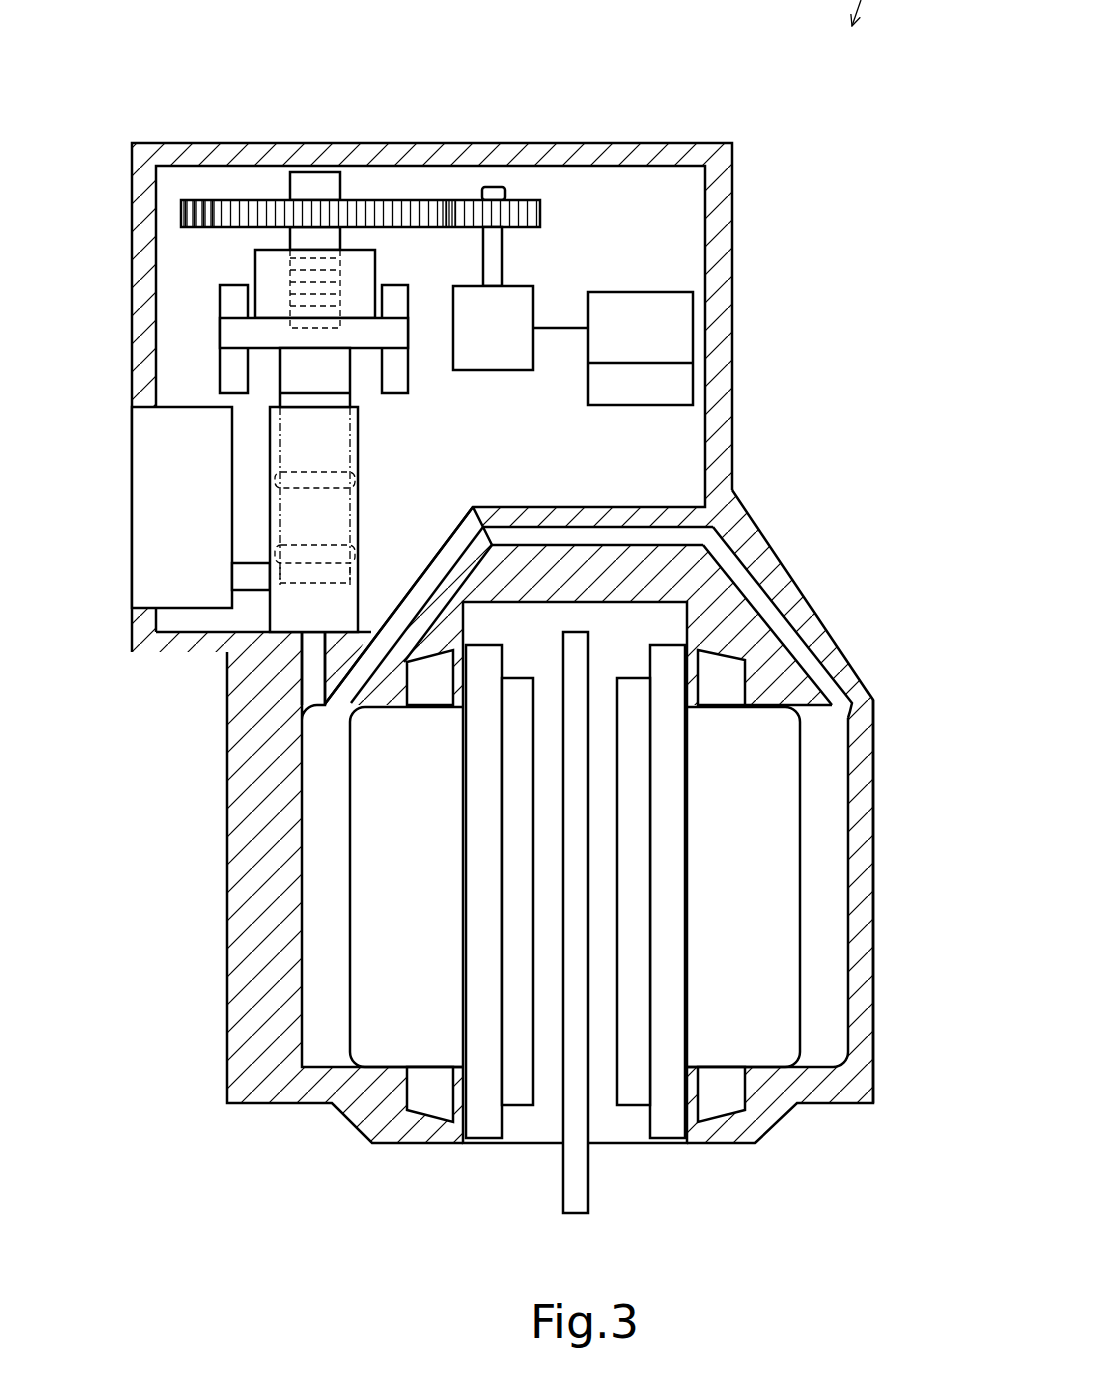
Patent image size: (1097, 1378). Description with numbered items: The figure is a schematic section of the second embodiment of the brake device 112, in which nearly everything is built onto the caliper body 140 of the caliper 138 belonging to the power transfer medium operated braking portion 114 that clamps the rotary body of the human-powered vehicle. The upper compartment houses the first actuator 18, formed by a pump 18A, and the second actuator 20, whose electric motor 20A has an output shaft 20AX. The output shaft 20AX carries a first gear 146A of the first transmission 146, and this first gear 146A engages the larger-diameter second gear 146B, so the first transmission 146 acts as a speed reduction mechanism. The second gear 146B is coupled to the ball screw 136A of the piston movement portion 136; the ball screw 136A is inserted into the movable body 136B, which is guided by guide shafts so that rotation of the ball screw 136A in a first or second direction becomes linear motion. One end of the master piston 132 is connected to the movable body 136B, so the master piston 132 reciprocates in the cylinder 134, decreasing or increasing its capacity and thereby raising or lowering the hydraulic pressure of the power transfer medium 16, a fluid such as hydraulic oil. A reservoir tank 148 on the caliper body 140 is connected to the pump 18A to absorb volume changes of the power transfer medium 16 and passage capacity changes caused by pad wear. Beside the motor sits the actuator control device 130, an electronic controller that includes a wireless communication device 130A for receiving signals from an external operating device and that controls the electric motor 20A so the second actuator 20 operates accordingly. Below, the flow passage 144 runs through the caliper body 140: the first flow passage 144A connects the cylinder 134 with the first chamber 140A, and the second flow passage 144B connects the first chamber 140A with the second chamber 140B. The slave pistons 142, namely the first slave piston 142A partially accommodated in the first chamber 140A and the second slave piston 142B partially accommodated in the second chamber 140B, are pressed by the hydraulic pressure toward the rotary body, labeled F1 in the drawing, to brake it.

The brake device 112 is at (762, 126).
The power transfer medium operated braking portion 114 is at (819, 553).
The power transfer medium 16 is at (333, 603).
The first actuator 18 is at (381, 556).
The pump 18A is at (355, 504).
The second actuator 20 is at (489, 329).
The electric motor 20A is at (520, 372).
The output shaft 20AX is at (483, 255).
The actuator control device 130 is at (646, 348).
The wireless communication device 130A is at (660, 406).
The master piston 132 is at (350, 438).
The cylinder 134 is at (268, 441).
The piston movement portion 136 is at (322, 325).
The ball screw 136A is at (289, 186).
The movable body 136B is at (403, 336).
The caliper 138 is at (875, 822).
The caliper body 140 is at (549, 887).
The first chamber 140A is at (338, 865).
The second chamber 140B is at (814, 938).
The slave pistons 142 is at (576, 941).
The first slave piston 142A is at (395, 1048).
The second slave piston 142B is at (755, 1047).
The flow passage 144 is at (496, 592).
The first flow passage 144A is at (308, 688).
The second flow passage 144B is at (633, 533).
The first transmission 146 is at (409, 135).
The first gear 146A is at (541, 212).
The second gear 146B is at (393, 208).
The reservoir tank 148 is at (132, 470).
The magnetic flux F1 is at (573, 1214).